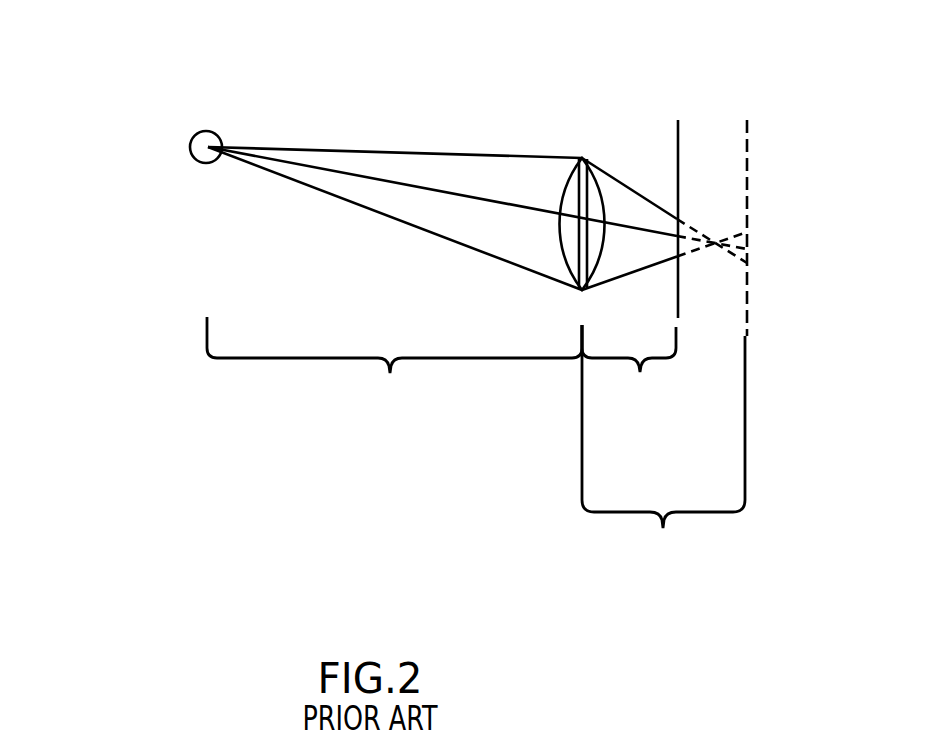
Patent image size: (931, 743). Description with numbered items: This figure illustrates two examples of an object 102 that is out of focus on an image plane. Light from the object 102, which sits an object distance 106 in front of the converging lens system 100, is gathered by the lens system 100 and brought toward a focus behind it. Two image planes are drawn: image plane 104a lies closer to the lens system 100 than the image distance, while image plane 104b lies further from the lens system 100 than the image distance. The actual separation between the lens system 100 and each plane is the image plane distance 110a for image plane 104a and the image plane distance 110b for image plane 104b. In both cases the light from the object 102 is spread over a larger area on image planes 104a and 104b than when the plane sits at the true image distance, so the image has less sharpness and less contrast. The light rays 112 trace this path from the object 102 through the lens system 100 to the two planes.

The lens system 100 is at (588, 160).
The object 102 is at (207, 146).
The image plane 104a is at (681, 137).
The image plane 104b is at (749, 193).
The object distance 106 is at (394, 397).
The image plane distance 110a is at (645, 416).
The image plane distance 110b is at (663, 497).
The light rays 112 is at (477, 145).